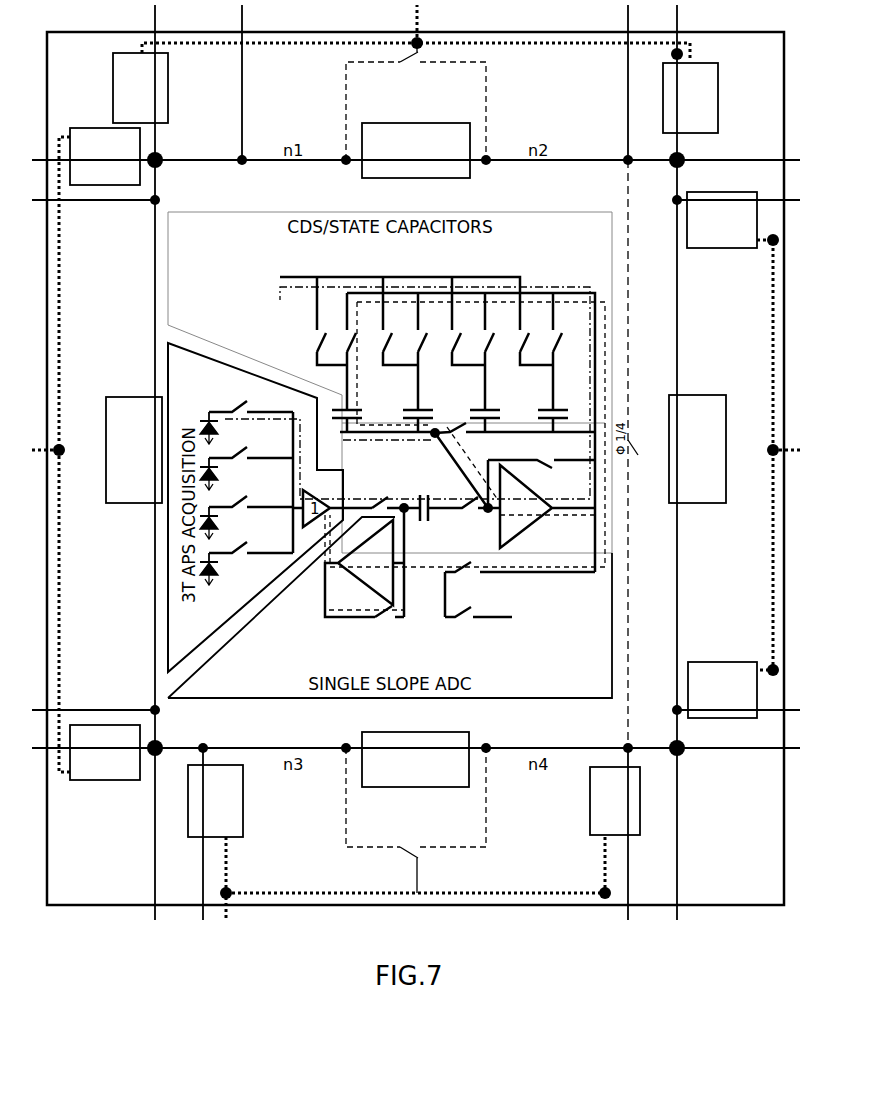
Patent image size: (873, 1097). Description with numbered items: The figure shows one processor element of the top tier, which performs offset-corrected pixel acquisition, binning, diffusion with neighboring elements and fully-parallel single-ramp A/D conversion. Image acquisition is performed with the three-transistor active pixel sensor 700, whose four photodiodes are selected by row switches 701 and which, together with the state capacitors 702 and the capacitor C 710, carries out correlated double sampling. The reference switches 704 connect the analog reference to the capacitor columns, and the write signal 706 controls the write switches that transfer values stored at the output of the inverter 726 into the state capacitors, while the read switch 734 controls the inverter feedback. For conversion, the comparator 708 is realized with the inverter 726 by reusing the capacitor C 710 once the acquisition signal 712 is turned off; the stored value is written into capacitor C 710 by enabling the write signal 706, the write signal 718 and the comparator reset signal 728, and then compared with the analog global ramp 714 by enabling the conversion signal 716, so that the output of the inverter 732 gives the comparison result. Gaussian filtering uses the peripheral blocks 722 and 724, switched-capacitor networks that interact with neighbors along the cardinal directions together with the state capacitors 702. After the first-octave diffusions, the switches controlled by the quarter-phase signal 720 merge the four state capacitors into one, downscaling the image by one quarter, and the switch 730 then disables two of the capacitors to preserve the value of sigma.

The 3T active pixel sensor 700 is at (203, 422).
The row select switch 701 is at (236, 403).
The state capacitors 702 is at (345, 425).
The reference voltage switch 704 is at (300, 340).
The write signal phi_write_si 706 is at (325, 300).
The comparator for A/D conversion 708 is at (418, 612).
The capacitor C 710 is at (430, 522).
The acquisition signal phi_acq 712 is at (380, 500).
The analog global ramp V_ramp 714 is at (540, 630).
The conversion signal phi_conv 716 is at (470, 640).
The write signal phi_write 718 is at (475, 578).
The switches controlled by phi_1/4 720 is at (400, 82).
The peripheral block B 722 is at (110, 128).
The peripheral block A 724 is at (418, 178).
The inverter 726 is at (530, 527).
The comparator reset signal phi_comp_rst 728 is at (378, 640).
The switch phi'_1/4 730 is at (485, 443).
The output of the inverter 732 is at (282, 640).
The read switch 734 is at (538, 455).